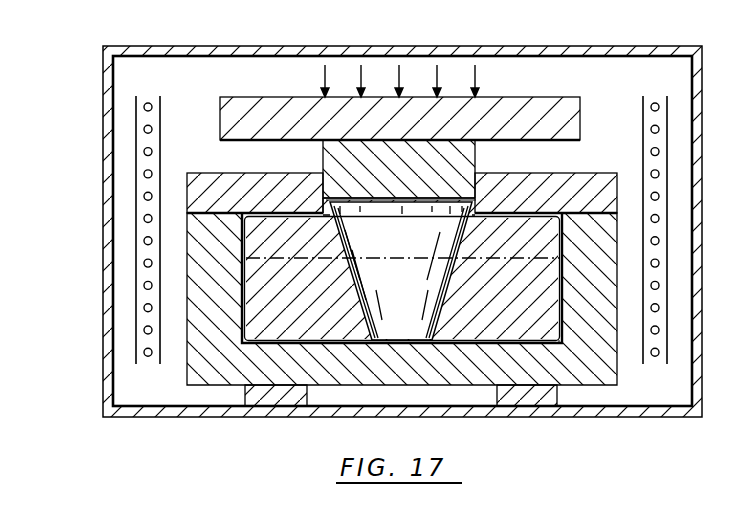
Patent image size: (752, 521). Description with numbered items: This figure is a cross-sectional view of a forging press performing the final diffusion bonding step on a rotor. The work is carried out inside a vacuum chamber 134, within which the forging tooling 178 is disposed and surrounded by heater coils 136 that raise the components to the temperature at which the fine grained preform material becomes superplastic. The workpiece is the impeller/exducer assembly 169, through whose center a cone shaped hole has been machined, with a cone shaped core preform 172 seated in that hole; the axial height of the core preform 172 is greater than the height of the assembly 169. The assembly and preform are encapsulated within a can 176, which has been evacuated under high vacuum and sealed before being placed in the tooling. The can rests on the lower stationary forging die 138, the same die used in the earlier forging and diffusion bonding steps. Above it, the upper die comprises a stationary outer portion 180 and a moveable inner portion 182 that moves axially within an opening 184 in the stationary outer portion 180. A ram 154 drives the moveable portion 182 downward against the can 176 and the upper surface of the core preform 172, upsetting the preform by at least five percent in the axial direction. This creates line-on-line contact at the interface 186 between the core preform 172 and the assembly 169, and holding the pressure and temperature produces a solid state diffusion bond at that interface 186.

The vacuum chamber 134 is at (215, 68).
The heater coils 136 is at (148, 103).
The lower stationary forging die 138 is at (195, 238).
The ram 154 is at (414, 122).
The impeller/exducer assembly 169 is at (540, 334).
The core preform 172 is at (414, 254).
The can 176 is at (270, 345).
The forging tooling 178 is at (537, 172).
The stationary outer portion of upper die 180 is at (211, 173).
The moveable inner portion of upper die 182 is at (414, 177).
The opening 184 is at (320, 172).
The interface 186 is at (348, 283).